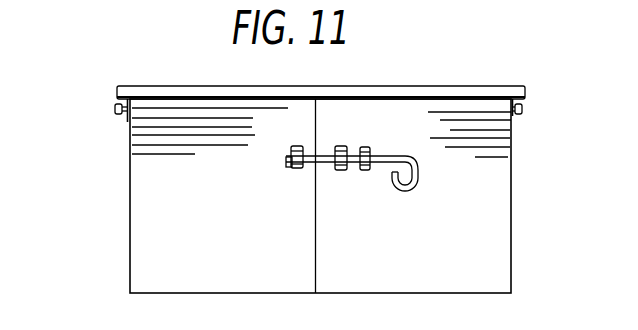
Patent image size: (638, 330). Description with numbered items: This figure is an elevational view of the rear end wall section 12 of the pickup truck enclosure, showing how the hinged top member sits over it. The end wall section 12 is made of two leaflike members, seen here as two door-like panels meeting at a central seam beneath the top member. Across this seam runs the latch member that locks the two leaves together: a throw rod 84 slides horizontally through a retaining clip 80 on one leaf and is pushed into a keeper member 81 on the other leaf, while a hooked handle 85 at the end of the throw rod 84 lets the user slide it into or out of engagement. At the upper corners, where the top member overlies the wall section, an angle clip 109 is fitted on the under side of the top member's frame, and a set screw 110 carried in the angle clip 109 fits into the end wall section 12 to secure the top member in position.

The end wall section 12 is at (210, 251).
The retaining clip 80 is at (339, 171).
The keeper member 81 is at (296, 170).
The throw rod 84 is at (390, 156).
The handle 85 is at (419, 182).
The angle clip 109 is at (127, 119).
The set screw 110 is at (114, 108).